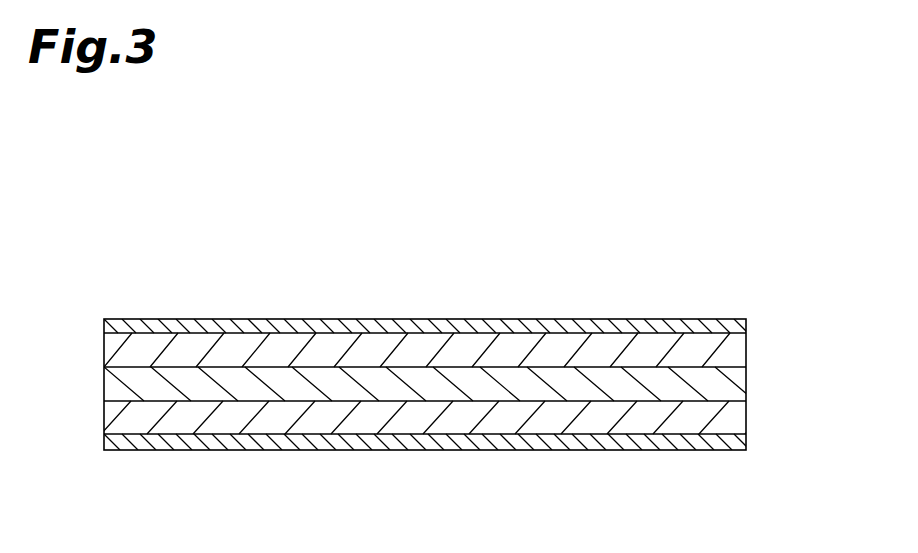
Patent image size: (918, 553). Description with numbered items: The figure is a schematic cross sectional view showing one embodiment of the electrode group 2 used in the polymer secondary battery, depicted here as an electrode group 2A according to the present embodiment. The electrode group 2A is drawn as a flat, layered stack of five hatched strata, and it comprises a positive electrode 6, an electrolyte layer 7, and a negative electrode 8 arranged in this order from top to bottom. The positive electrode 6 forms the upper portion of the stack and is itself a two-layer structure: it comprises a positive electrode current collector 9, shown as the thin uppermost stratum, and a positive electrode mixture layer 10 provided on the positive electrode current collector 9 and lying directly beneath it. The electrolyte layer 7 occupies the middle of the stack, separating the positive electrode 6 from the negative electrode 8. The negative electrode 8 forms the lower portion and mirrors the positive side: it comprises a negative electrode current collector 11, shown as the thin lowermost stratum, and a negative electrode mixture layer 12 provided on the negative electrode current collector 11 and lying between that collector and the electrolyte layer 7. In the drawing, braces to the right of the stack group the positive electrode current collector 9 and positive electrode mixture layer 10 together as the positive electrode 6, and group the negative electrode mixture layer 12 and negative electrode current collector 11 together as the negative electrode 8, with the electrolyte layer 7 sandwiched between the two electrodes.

The electrode group 2A is at (700, 288).
The electrode group 2 is at (437, 331).
The positive electrode 6 is at (811, 311).
The electrolyte layer 7 is at (747, 385).
The negative electrode 8 is at (811, 408).
The positive electrode current collector 9 is at (747, 323).
The positive electrode mixture layer 10 is at (747, 352).
The negative electrode current collector 11 is at (747, 437).
The negative electrode mixture layer 12 is at (747, 418).